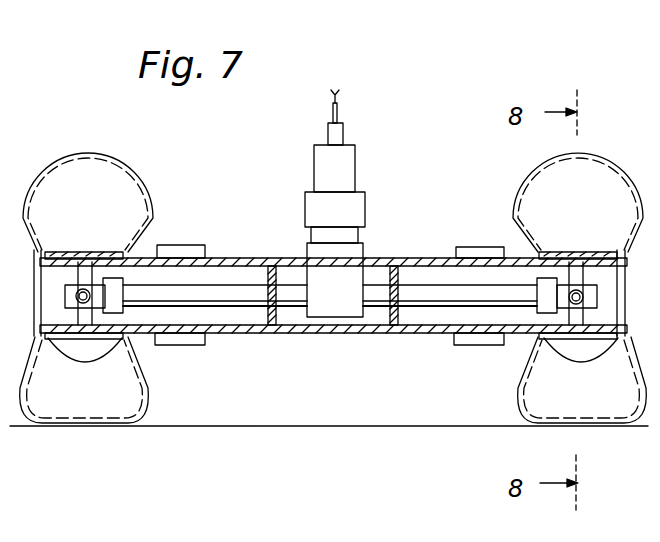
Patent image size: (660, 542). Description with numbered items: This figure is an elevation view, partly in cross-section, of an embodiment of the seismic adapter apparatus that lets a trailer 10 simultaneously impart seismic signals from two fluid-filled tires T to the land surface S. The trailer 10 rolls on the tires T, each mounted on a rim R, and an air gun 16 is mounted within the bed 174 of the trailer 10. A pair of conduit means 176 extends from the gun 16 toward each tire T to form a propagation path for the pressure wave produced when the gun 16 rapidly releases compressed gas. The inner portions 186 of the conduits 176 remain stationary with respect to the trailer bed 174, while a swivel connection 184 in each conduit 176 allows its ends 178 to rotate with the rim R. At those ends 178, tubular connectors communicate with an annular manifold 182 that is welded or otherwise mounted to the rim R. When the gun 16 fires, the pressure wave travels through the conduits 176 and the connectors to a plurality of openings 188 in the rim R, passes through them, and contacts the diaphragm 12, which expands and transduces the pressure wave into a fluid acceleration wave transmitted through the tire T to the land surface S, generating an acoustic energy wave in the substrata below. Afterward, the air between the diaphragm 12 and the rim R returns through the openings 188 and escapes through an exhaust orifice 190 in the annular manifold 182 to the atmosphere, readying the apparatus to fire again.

The trailer 10 is at (320, 337).
The diaphragm 12 is at (86, 246).
The air gun 16 is at (355, 160).
The bed 174 is at (432, 273).
The conduit means 176 is at (232, 300).
The ends of conduits 178 is at (64, 276).
The annular manifold 182 is at (166, 278).
The swivel connection 184 is at (128, 294).
The inner portions of conduits 186 is at (287, 293).
The openings in rim 188 is at (83, 347).
The exhaust orifice 190 is at (70, 346).
The tire T is at (122, 163).
The rim R is at (130, 277).
The land surface S is at (337, 423).